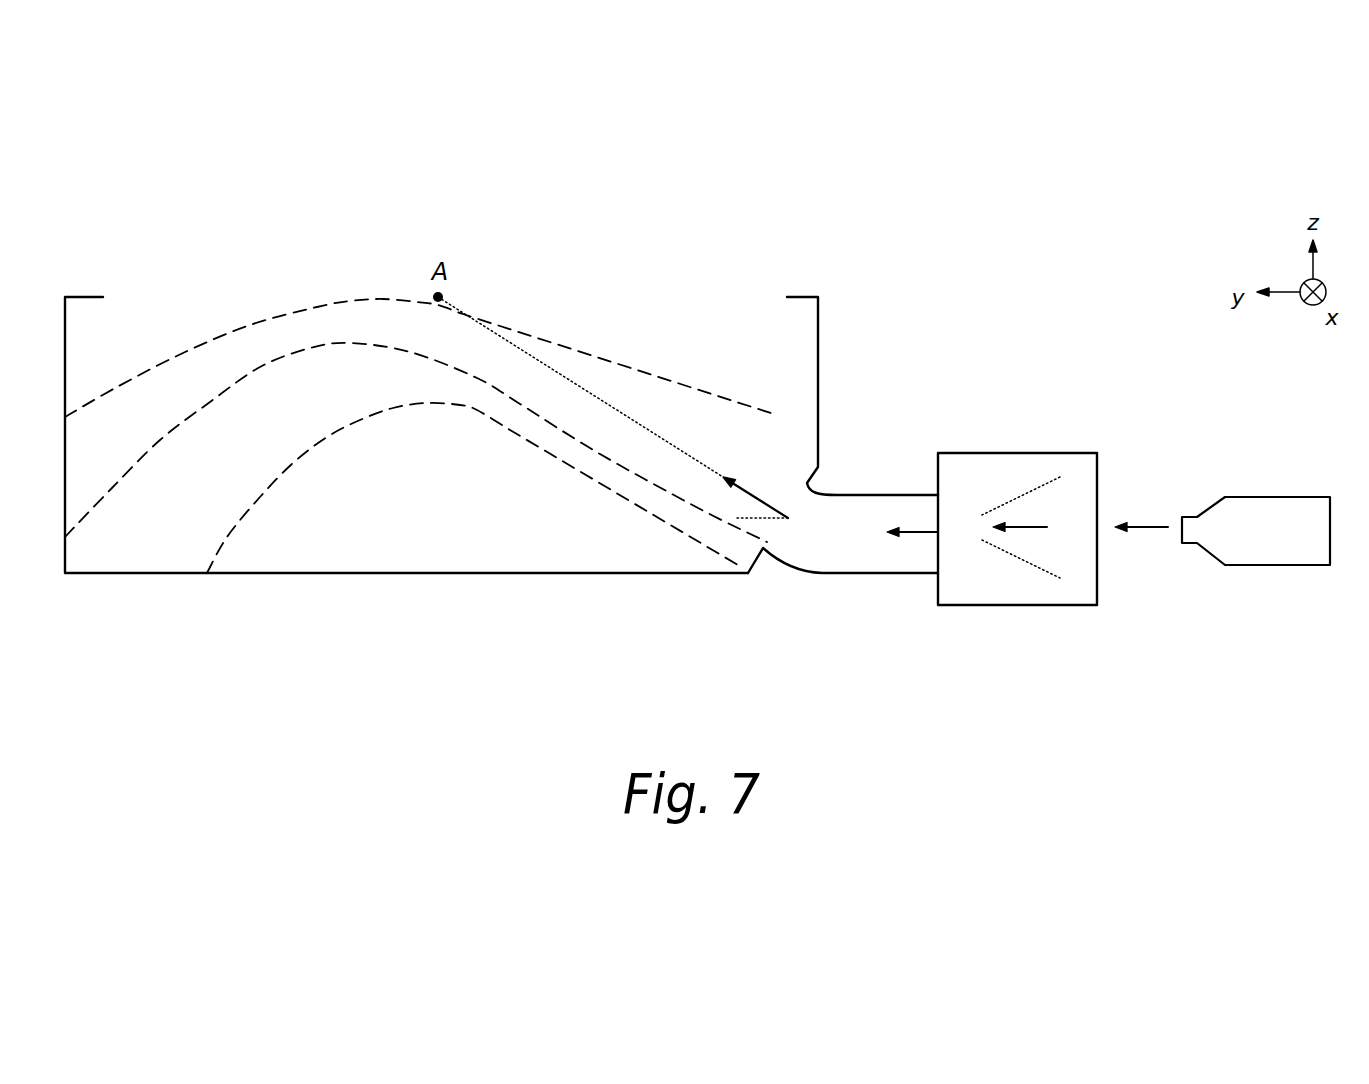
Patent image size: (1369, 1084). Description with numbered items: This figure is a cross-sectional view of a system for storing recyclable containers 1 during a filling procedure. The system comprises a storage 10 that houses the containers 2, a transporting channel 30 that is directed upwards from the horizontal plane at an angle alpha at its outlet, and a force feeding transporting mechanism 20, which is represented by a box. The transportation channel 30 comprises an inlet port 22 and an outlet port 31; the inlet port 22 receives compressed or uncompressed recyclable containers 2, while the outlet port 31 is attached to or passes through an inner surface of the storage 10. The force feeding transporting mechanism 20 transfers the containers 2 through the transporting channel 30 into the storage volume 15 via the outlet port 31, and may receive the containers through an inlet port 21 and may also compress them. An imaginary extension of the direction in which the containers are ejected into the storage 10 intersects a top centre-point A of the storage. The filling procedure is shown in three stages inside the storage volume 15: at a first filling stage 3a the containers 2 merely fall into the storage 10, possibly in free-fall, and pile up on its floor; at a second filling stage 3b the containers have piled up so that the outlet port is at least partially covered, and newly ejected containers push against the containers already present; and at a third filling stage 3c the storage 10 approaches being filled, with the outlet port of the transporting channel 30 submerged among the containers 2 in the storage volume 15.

The system for storing recyclable containers 1 is at (1151, 286).
The recyclable container 2 is at (1273, 497).
The first filling stage 3a is at (253, 507).
The second filling stage 3b is at (268, 360).
The third filling stage 3c is at (307, 308).
The storage 10 is at (818, 308).
The storage volume 15 is at (689, 321).
The force feeding transporting mechanism 20 is at (1068, 453).
The inlet port 21 is at (1150, 527).
The inlet port 22 is at (910, 532).
The transporting channel 30 is at (833, 492).
The outlet port 31 is at (748, 517).